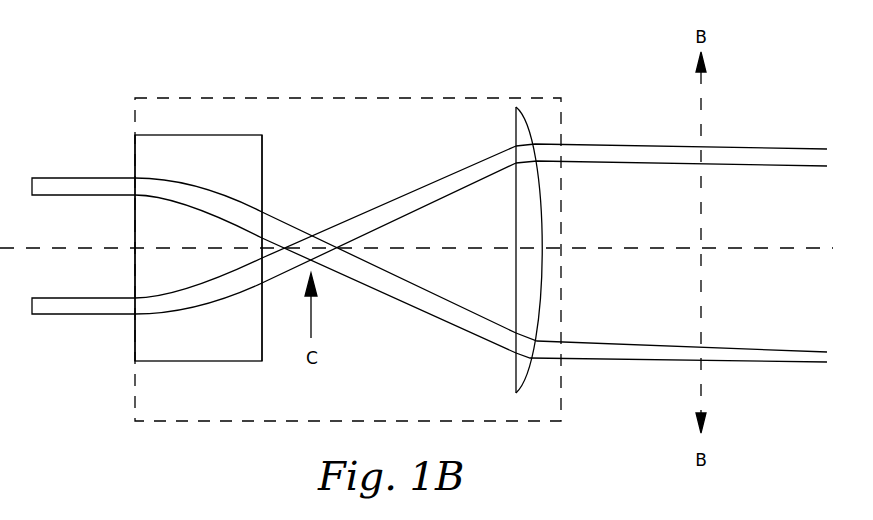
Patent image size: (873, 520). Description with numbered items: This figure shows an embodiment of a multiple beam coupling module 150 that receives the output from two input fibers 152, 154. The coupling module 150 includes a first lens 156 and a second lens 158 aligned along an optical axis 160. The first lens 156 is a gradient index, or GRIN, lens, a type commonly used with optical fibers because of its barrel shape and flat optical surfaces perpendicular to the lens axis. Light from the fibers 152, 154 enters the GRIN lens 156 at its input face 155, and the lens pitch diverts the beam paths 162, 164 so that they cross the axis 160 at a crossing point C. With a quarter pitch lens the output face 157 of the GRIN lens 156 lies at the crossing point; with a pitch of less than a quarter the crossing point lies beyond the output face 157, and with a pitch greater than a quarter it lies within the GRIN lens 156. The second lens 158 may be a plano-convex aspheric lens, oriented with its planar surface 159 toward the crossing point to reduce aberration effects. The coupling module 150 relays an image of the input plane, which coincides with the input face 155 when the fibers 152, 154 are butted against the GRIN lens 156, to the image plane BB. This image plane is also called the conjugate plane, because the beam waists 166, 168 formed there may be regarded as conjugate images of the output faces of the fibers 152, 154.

The coupling module 150 is at (408, 98).
The input fiber 152 is at (85, 184).
The input fiber 154 is at (80, 312).
The input face 155 is at (133, 343).
The first lens 156 is at (213, 135).
The output face 157 is at (263, 171).
The second lens 158 is at (525, 112).
The planar surface 159 is at (515, 365).
The optical axis 160 is at (778, 253).
The beam path 162 is at (382, 288).
The beam path 164 is at (388, 208).
The beam waist 166 is at (697, 358).
The beam waist 168 is at (700, 155).